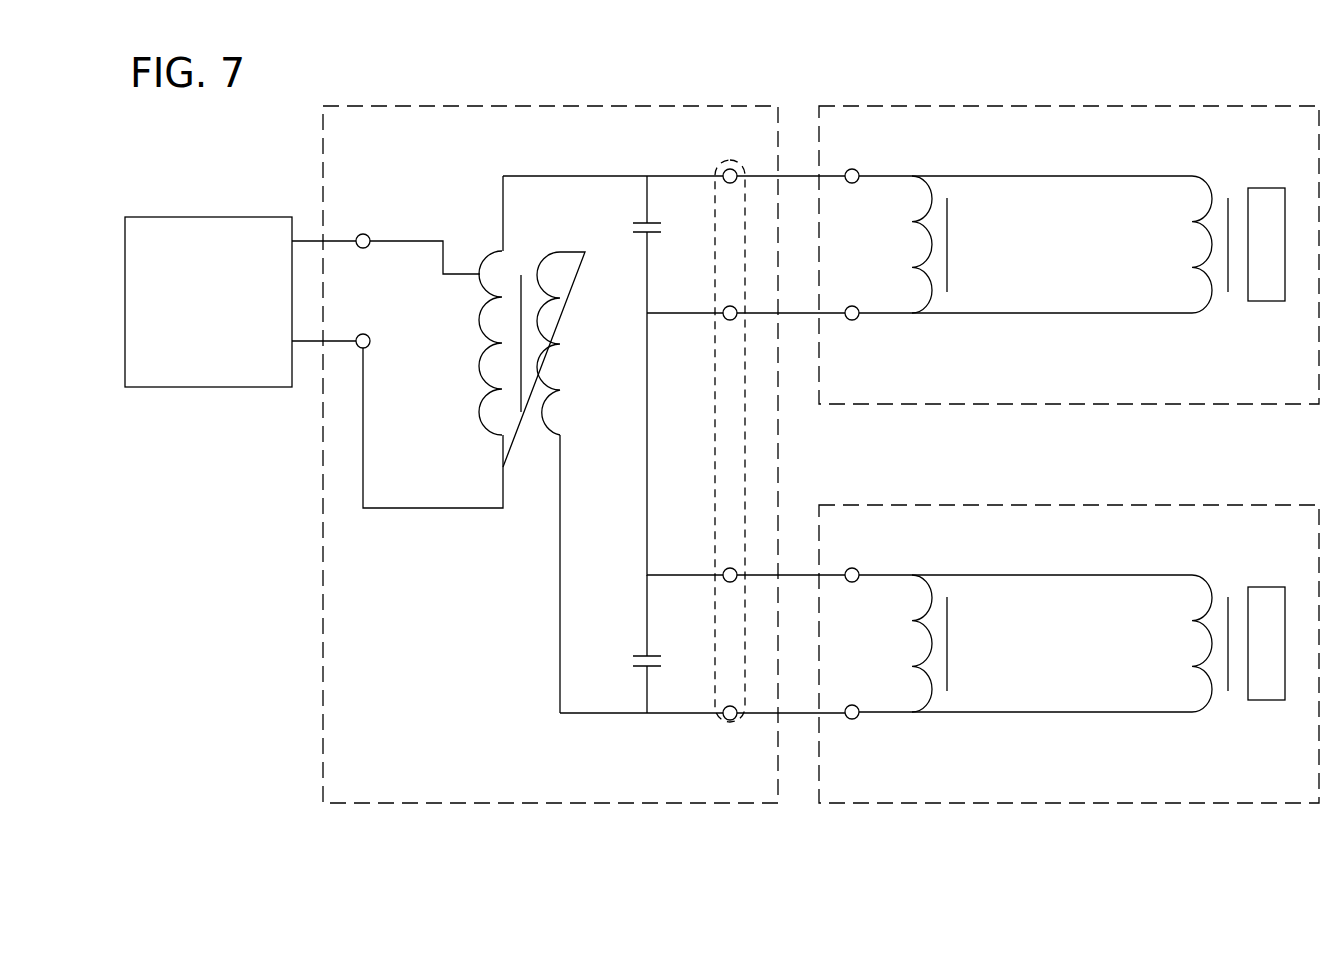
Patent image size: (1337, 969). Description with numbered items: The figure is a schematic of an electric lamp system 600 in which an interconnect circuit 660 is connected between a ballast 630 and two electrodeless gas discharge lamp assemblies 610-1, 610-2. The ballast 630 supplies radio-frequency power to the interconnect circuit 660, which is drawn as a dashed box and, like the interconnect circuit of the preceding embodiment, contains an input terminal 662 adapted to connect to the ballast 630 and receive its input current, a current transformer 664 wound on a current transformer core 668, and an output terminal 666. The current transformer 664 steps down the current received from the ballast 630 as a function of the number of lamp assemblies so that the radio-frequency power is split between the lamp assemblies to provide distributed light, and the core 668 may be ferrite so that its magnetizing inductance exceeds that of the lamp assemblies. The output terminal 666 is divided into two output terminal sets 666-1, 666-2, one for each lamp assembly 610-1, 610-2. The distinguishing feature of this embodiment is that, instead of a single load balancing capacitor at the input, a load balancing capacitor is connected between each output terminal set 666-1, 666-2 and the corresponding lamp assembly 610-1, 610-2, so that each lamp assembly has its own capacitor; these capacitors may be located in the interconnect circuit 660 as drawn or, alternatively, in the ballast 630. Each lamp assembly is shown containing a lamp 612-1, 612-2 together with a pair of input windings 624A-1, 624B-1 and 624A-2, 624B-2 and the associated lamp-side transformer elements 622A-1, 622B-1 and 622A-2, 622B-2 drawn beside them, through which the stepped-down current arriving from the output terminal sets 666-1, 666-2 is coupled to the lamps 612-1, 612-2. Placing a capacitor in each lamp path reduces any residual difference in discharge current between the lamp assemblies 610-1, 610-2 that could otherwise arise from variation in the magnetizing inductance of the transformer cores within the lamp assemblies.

The electric lamp system 600 is at (678, 68).
The ballast 630 is at (243, 217).
The interconnect circuit 660 is at (446, 105).
The input terminals 662 is at (385, 227).
The transformer 664 is at (495, 415).
The adjustable inductance 668 is at (527, 458).
The output terminal 666 is at (615, 458).
The output terminal set 666-1 is at (732, 306).
The output terminal set 666-2 is at (732, 705).
The lamp assembly 610-1 is at (1159, 106).
The lamp assembly 610-2 is at (1159, 505).
The first lamp 612-1 is at (1273, 188).
The second lamp 612-2 is at (1273, 587).
The first lamp electrode A 622A-1 is at (951, 270).
The first lamp electrode B 622B-1 is at (1229, 276).
The second lamp electrode A 622A-2 is at (951, 669).
The second lamp electrode B 622B-2 is at (1229, 675).
The first lamp input winding A 624A-1 is at (941, 296).
The first lamp input winding B 624B-1 is at (1205, 248).
The second lamp input winding A 624A-2 is at (941, 695).
The second lamp input winding B 624B-2 is at (1205, 647).